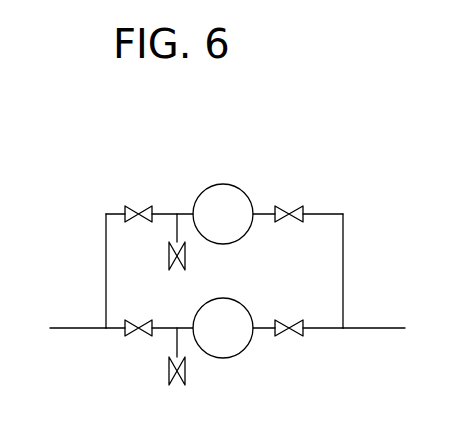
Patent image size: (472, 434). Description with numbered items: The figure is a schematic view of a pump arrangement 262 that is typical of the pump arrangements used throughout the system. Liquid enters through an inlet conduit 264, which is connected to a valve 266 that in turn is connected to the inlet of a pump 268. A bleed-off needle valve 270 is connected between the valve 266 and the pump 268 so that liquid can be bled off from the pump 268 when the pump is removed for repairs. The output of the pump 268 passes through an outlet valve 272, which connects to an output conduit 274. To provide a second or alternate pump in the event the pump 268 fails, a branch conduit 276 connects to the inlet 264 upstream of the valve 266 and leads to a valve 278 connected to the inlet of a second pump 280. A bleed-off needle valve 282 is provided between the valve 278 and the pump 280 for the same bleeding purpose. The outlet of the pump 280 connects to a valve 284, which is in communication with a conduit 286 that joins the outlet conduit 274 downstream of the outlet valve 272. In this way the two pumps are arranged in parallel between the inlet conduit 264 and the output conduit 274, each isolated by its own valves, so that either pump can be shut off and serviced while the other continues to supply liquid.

The pump arrangement 262 is at (239, 139).
The inlet conduit 264 is at (97, 330).
The valve 266 is at (137, 322).
The pump 268 is at (236, 301).
The bleed-off needle valve 270 is at (185, 371).
The outlet valve 272 is at (284, 338).
The output conduit 274 is at (365, 330).
The branch conduit 276 is at (105, 266).
The valve 278 is at (132, 206).
The pump 280 is at (223, 184).
The bleed-off needle valve 282 is at (185, 256).
The valve 284 is at (283, 206).
The conduit 286 is at (344, 270).